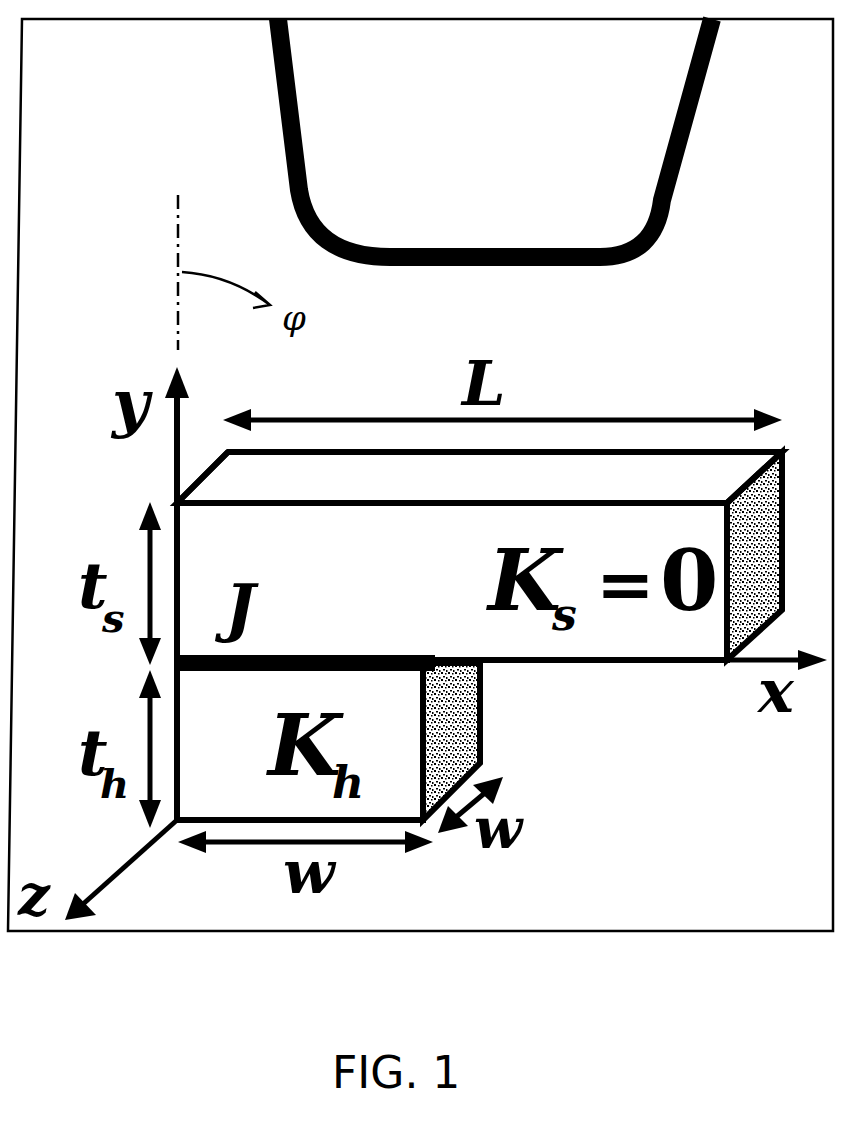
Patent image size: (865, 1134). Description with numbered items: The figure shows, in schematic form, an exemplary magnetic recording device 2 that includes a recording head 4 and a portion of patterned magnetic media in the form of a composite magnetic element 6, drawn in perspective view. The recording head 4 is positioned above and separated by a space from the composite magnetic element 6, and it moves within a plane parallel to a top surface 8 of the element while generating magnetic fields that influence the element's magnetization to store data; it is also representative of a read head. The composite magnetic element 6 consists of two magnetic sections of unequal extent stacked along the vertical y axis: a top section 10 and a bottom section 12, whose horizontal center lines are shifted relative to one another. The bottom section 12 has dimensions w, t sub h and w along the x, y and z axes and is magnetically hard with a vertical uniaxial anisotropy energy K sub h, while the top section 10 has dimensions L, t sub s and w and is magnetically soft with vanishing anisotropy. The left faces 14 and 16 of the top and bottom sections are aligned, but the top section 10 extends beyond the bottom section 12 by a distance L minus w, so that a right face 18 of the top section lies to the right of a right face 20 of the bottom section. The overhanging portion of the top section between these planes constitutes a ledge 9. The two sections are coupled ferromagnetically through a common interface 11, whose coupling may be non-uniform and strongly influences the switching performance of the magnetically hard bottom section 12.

The magnetic recording device 2 is at (702, 944).
The recording head 4 is at (560, 205).
The composite magnetic element 6 is at (507, 579).
The top surface 8 is at (626, 490).
The ledge 9 is at (648, 673).
The top section 10 is at (507, 513).
The common interface 11 is at (320, 654).
The bottom section 12 is at (369, 741).
The left face of top section 14 is at (213, 452).
The left face of bottom section 16 is at (186, 730).
The right face of top section 18 is at (782, 527).
The right face of bottom section 20 is at (467, 732).